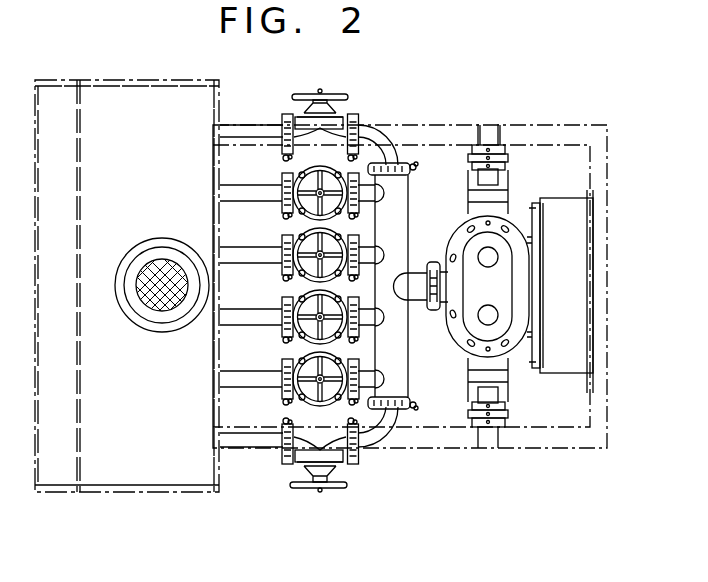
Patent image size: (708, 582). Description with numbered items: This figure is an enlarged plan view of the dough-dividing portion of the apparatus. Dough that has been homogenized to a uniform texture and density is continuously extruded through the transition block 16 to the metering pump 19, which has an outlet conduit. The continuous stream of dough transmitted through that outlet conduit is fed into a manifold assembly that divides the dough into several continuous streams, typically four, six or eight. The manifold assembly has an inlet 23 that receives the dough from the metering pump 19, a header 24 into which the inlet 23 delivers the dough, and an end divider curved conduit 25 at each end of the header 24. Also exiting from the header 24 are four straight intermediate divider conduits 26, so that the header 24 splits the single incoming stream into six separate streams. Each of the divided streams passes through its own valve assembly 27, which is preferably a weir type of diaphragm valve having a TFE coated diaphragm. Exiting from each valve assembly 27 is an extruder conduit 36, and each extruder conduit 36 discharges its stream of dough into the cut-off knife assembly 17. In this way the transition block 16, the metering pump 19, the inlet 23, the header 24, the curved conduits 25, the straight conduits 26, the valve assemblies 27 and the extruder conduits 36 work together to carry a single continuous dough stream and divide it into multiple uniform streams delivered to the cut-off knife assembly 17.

The transition block 16 is at (563, 356).
The cut-off knife assembly 17 is at (147, 467).
The metering pump 19 is at (488, 278).
The inlet 23 is at (417, 300).
The header 24 is at (409, 206).
The end divider curved conduit 25 is at (383, 121).
The straight intermediate divider conduit 26 is at (362, 358).
The valve assembly 27 is at (343, 92).
The extruder conduit 36 is at (252, 122).